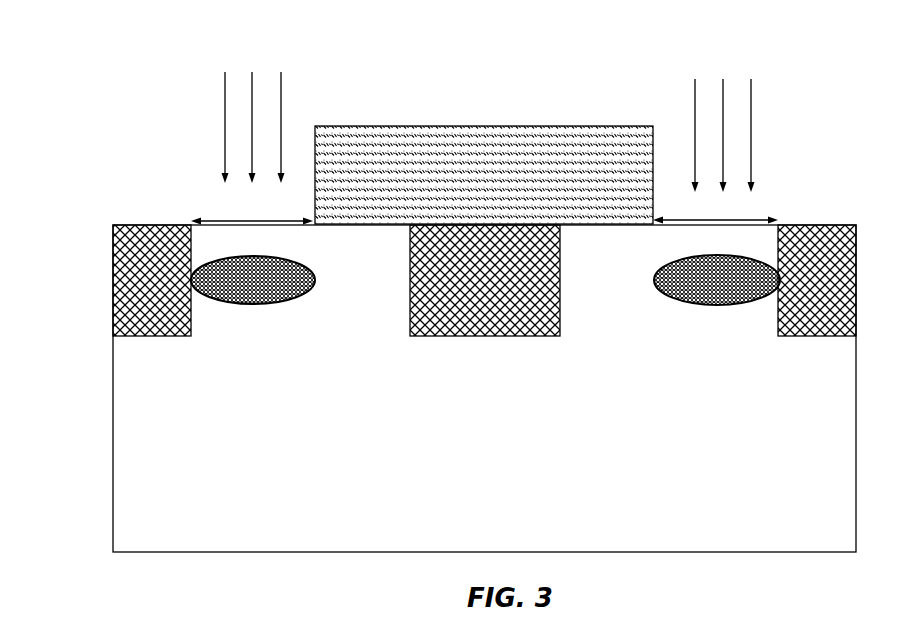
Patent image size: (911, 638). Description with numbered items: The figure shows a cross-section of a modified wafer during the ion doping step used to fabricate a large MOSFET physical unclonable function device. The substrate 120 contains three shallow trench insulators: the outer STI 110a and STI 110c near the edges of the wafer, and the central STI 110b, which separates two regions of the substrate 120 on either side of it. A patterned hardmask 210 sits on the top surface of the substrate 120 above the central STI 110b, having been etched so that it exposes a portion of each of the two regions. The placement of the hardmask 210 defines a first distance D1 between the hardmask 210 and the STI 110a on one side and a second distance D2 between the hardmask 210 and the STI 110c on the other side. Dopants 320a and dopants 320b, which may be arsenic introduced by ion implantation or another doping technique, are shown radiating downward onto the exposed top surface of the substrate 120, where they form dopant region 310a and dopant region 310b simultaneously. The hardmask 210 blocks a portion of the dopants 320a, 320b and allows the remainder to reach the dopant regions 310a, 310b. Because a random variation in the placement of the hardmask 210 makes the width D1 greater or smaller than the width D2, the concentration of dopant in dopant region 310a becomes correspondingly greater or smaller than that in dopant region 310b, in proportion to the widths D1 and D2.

The substrate 120 is at (484, 388).
The shallow trench insulator 110a is at (150, 211).
The shallow trench insulator 110b is at (479, 349).
The shallow trench insulator 110c is at (819, 212).
The hardmask 210 is at (406, 107).
The dopant region 310a is at (250, 320).
The dopant region 310b is at (702, 320).
The dopants 320a is at (251, 47).
The dopants 320b is at (720, 61).
The first distance D1 is at (252, 210).
The second distance D2 is at (715, 209).